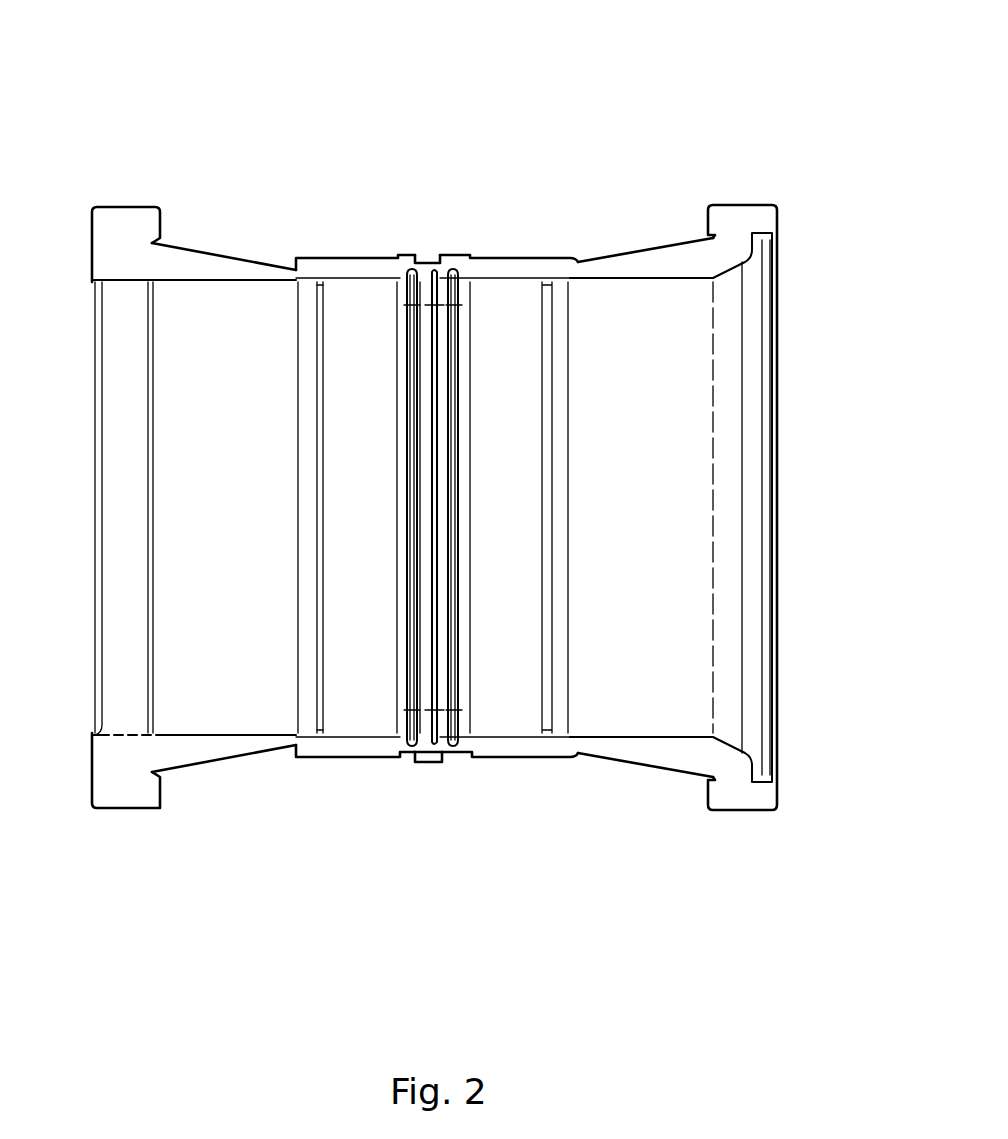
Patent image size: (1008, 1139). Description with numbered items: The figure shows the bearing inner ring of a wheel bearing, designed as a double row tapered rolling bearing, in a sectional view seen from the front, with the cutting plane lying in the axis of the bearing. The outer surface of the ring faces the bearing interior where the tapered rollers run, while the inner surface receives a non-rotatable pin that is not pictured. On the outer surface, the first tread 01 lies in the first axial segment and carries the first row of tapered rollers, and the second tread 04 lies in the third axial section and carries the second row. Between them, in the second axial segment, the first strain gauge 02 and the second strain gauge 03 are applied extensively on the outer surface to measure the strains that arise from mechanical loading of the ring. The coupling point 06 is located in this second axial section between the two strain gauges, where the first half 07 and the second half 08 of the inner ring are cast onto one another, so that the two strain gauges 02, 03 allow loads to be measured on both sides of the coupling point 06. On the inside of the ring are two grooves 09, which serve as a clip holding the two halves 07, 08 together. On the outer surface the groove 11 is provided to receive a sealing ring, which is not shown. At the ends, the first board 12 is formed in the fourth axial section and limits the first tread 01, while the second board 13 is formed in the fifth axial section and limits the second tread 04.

The first tread 01 is at (198, 245).
The first strain gauge 02 is at (355, 257).
The second strain gauge 03 is at (525, 255).
The second tread 04 is at (672, 236).
The coupling point 06 is at (432, 268).
The first half of the inner ring 07 is at (300, 760).
The second half of the inner ring 08 is at (595, 703).
The grooves 09 is at (410, 748).
The groove 11 is at (430, 762).
The first board 12 is at (118, 800).
The second board 13 is at (767, 800).